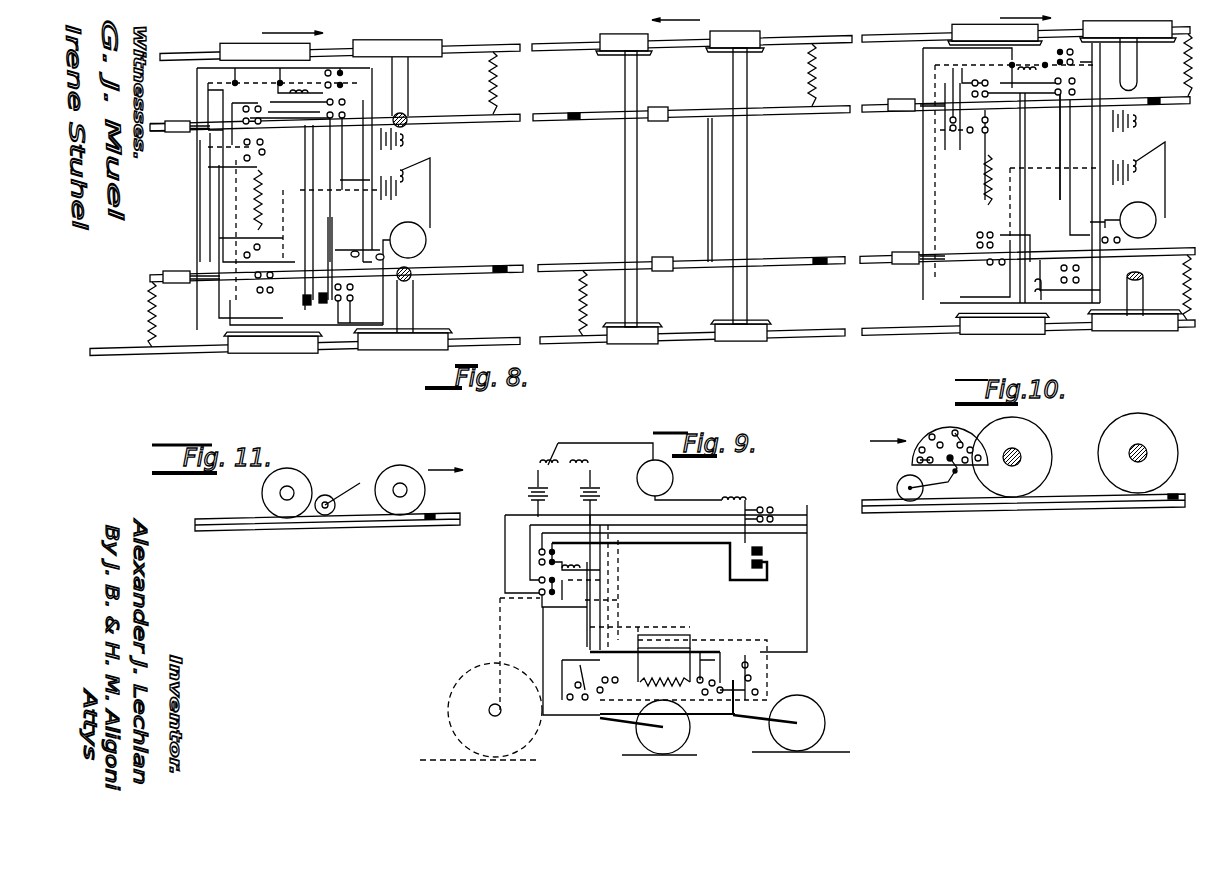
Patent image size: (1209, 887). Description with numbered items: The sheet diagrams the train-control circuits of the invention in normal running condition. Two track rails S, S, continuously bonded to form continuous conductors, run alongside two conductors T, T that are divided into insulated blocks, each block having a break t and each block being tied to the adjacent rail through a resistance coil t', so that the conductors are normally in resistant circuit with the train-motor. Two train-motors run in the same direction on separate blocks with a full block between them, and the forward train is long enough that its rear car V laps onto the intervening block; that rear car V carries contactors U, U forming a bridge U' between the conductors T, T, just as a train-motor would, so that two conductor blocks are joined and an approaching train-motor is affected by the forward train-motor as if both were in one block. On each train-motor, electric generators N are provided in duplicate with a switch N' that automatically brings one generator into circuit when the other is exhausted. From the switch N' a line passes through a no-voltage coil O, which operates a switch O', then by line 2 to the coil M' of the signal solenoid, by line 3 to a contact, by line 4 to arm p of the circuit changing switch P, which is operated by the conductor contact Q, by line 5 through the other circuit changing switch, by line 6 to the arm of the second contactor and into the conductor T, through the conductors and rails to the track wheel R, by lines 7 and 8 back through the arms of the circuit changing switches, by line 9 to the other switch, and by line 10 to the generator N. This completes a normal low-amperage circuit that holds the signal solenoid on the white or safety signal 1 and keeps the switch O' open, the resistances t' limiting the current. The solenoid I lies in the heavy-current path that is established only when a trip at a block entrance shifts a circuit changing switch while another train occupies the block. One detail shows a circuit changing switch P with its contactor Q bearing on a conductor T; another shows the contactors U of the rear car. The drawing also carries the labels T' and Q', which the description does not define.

In FIG. 8, the train-motor track wheel R is at (1137, 330).
In FIG. 9, the train-motor track wheel R is at (481, 711).
In FIG. 10, the train-motor track wheel R is at (1075, 455).
In FIG. 11, the train-motor track wheel R is at (343, 491).
In FIG. 8, the track rail S is at (175, 350).
In FIG. 10, the track rail S is at (1173, 495).
In FIG. 11, the track rail S is at (447, 514).
In FIG. 10, the conductor T is at (867, 485).
In FIG. 11, the conductor T is at (420, 533).
In FIG. 8, the middle rail T' is at (672, 189).
In FIG. 8, the break t is at (828, 196).
In FIG. 8, the resistance coil t' is at (670, 190).
In FIG. 8, the rear car V is at (720, 79).
In FIG. 8, the contactor U is at (660, 189).
In FIG. 11, the contactor U is at (337, 499).
In FIG. 8, the connection or bridge U' is at (697, 190).
In FIG. 8, the conductor contact Q is at (532, 116).
In FIG. 9, the conductor contact Q is at (659, 727).
In FIG. 10, the conductor contact Q is at (903, 479).
In FIG. 9, the contact arm Q' is at (631, 731).
In FIG. 10, the contact arm Q' is at (933, 479).
In FIG. 8, the electric generator N is at (753, 155).
In FIG. 9, the electric generator N is at (564, 497).
In FIG. 8, the switch N' is at (782, 148).
In FIG. 9, the switch N' is at (563, 451).
In FIG. 8, the solenoid I is at (300, 90).
In FIG. 9, the solenoid I is at (580, 566).
In FIG. 8, the coil of the signal solenoid M' is at (672, 328).
In FIG. 9, the coil of the signal solenoid M' is at (771, 563).
In FIG. 9, the no-voltage coil O is at (752, 502).
In FIG. 9, the switch O' is at (764, 502).
In FIG. 10, the circuit changing switch P is at (930, 432).
In FIG. 9, the arm p is at (591, 682).
In FIG. 8, the safety signal 1 is at (434, 200).
In FIG. 9, the safety signal 1 is at (604, 443).
In FIG. 8, the line 2 is at (658, 71).
In FIG. 9, the line 2 is at (762, 510).
In FIG. 8, the line 3 is at (306, 228).
In FIG. 9, the line 3 is at (672, 549).
In FIG. 8, the line 4 is at (664, 96).
In FIG. 9, the line 4 is at (584, 614).
In FIG. 8, the line 5 is at (672, 177).
In FIG. 9, the line 5 is at (672, 654).
In FIG. 8, the line 6 is at (930, 262).
In FIG. 8, the line 7 is at (372, 93).
In FIG. 9, the line 7 is at (500, 645).
In FIG. 8, the line 8 is at (205, 108).
In FIG. 9, the line 8 is at (599, 584).
In FIG. 8, the line 9 is at (603, 182).
In FIG. 9, the line 9 is at (622, 692).
In FIG. 8, the line 10 is at (691, 215).
In FIG. 9, the line 10 is at (700, 640).